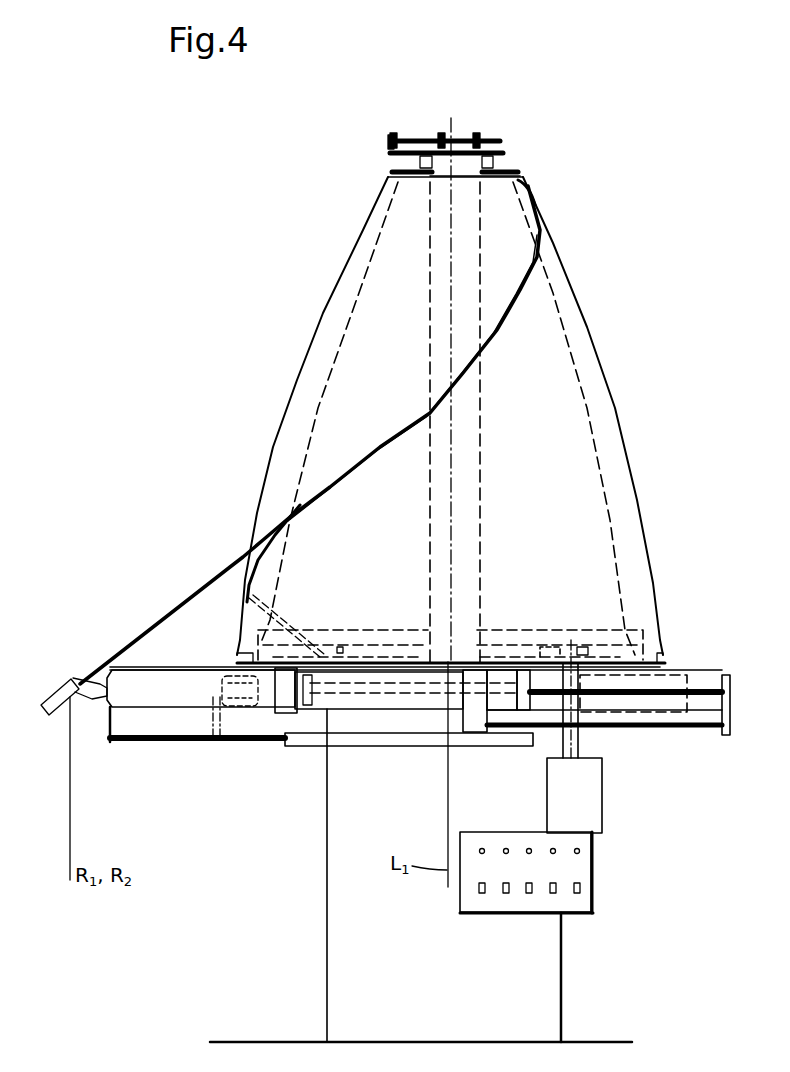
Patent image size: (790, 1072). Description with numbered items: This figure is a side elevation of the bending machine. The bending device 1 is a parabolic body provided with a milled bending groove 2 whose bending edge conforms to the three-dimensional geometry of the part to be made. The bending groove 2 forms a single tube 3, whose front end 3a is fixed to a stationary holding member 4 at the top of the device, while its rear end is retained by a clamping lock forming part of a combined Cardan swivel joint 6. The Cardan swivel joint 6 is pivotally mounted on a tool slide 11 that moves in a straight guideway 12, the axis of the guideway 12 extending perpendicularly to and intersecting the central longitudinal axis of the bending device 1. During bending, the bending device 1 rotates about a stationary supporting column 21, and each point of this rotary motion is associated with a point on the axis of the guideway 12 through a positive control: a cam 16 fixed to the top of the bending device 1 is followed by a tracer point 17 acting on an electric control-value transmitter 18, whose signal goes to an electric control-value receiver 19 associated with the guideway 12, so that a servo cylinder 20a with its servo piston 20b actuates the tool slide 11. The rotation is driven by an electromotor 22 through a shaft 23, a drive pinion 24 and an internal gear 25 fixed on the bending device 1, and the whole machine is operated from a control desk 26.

The bending device 1 is at (297, 382).
The bending groove 2 is at (262, 575).
The single tube 3 is at (168, 612).
The front end of tube 3a is at (525, 178).
The stationary holding member 4 is at (393, 175).
The Cardan swivel joint 6 is at (65, 674).
The tool slide 11 is at (183, 693).
The straight guideway 12 is at (388, 709).
The cam 16 is at (410, 140).
The tracer point 17 is at (370, 140).
The electric control-value transmitter 18 is at (463, 140).
The electric control-value receiver 19 is at (347, 742).
The servo cylinder 20a is at (417, 700).
The servo piston 20b is at (520, 742).
The stationary supporting column 21 is at (470, 548).
The electromotor 22 is at (597, 775).
The shaft 23 is at (578, 744).
The drive pinion 24 is at (588, 652).
The internal gear 25 is at (540, 648).
The control desk 26 is at (583, 904).